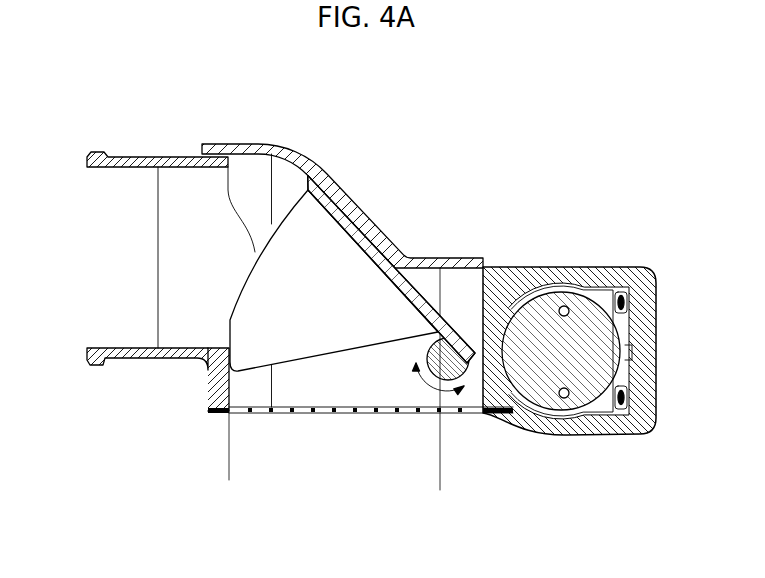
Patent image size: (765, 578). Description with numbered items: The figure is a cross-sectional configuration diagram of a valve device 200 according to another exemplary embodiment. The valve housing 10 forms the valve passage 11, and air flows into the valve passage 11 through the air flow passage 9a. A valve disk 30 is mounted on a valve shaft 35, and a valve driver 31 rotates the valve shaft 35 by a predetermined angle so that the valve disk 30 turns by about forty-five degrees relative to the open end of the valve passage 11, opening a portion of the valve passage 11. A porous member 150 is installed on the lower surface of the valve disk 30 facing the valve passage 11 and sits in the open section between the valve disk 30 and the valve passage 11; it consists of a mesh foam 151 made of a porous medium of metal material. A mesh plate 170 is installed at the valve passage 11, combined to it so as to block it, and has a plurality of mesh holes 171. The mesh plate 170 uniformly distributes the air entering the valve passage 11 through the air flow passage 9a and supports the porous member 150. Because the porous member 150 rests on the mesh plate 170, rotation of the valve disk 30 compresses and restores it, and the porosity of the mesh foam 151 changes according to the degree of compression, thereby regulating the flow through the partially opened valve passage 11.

The valve device 200 is at (370, 105).
The valve housing 10 is at (127, 368).
The air flow passage 9a is at (228, 438).
The mesh holes 171 is at (250, 413).
The valve passage 11 is at (325, 392).
The mesh foam 151 is at (291, 365).
The mesh plate 170 is at (366, 422).
The valve disk 30 is at (357, 243).
The valve shaft 35 is at (460, 358).
The porous member 150 is at (392, 359).
The valve driver 31 is at (562, 258).